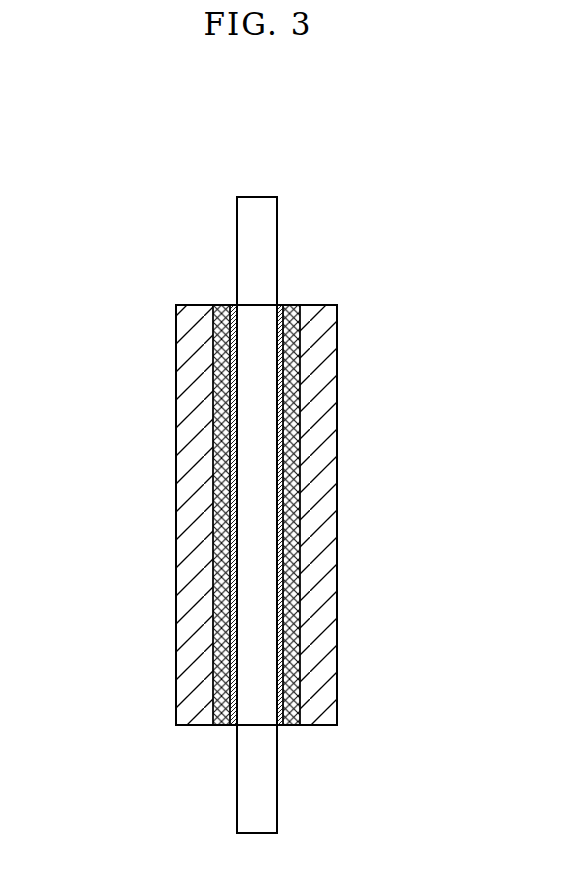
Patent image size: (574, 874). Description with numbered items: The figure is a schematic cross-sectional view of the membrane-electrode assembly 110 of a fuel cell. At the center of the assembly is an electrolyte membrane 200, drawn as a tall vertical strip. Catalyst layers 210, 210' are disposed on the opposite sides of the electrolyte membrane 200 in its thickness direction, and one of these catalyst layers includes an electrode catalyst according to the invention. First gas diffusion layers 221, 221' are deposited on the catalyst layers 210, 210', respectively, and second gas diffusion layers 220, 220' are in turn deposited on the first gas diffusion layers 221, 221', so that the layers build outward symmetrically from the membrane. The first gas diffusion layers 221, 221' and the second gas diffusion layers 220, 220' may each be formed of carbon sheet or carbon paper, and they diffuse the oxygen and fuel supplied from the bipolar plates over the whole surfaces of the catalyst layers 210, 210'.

The membrane-electrode assembly 110 is at (135, 230).
The electrolyte membrane 200 is at (256, 203).
The catalyst layer 210 is at (211, 550).
The catalyst layer 210' is at (302, 550).
The second gas diffusion layer 220 is at (144, 515).
The second gas diffusion layer 220' is at (371, 515).
The first gas diffusion layer 221 is at (202, 481).
The first gas diffusion layer 221' is at (312, 481).